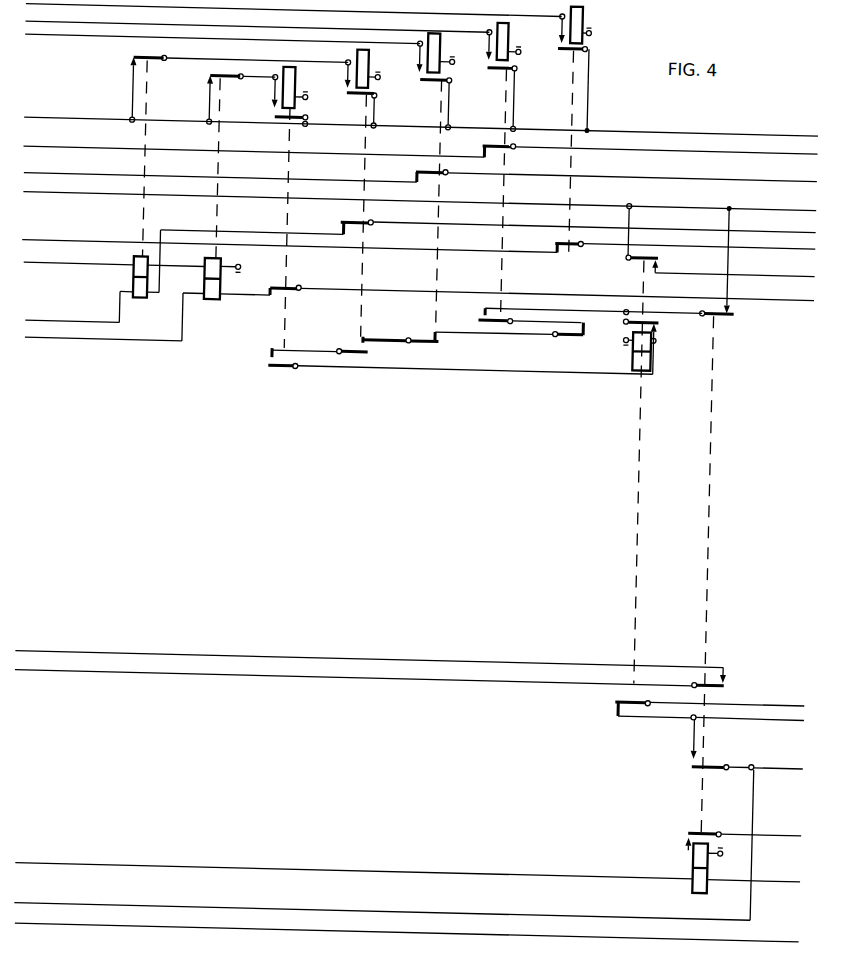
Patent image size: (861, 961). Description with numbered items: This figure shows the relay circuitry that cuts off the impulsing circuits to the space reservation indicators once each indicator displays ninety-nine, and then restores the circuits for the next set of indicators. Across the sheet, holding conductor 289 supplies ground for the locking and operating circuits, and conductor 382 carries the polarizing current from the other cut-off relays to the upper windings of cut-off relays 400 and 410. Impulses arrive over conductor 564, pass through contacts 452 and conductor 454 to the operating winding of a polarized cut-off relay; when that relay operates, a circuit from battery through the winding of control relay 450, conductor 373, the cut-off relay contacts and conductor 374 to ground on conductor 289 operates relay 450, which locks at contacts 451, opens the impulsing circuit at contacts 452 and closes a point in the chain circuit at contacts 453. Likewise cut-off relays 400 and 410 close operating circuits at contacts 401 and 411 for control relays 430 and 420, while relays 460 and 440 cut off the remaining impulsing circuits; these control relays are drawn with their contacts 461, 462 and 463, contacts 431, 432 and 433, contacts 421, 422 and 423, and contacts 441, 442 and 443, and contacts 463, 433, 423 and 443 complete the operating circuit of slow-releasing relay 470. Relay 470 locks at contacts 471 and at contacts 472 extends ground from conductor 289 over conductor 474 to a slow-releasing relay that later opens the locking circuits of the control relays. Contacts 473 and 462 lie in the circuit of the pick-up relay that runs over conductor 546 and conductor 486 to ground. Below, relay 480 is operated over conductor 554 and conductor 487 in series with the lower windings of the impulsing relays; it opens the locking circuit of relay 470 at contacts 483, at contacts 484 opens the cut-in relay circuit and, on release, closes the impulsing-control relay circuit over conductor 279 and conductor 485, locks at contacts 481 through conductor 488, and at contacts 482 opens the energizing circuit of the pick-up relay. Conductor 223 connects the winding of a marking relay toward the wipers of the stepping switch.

The conductor 373 is at (65, 20).
The conductor 374 is at (66, 116).
The conductor 454 is at (67, 145).
The conductor 564 is at (812, 134).
The holding conductor 289 is at (814, 190).
The conductor 382 is at (72, 261).
The conductor 474 is at (818, 256).
The conductor 485 is at (74, 650).
The conductor 279 is at (74, 668).
The conductor 546 is at (818, 686).
The conductor 486 is at (819, 748).
The conductor 488 is at (818, 816).
The conductor 554 is at (817, 862).
The conductor 487 is at (75, 862).
The conductor 223 is at (75, 922).
The cut-off relay 400 is at (140, 260).
The contacts 401 is at (134, 64).
The cut-off relay 410 is at (210, 258).
The contacts 411 is at (209, 77).
The control relay 420 is at (300, 208).
The relay contact 421 is at (276, 104).
The relay contact 422 is at (289, 286).
The contacts 423 is at (274, 349).
The control relay 430 is at (373, 192).
The relay contact 431 is at (350, 83).
The relay contact 432 is at (358, 218).
The contacts 433 is at (368, 326).
The control relay 440 is at (446, 182).
The relay contact 441 is at (422, 68).
The relay contact 442 is at (432, 165).
The contacts 443 is at (451, 326).
The control relay 450 is at (515, 169).
The contacts 451 is at (492, 55).
The contacts 452 is at (502, 138).
The contacts 453 is at (488, 300).
The control relay 460 is at (588, 129).
The relay contact 461 is at (559, 35).
The contacts 462 is at (558, 234).
The contacts 463 is at (603, 319).
The slow-releasing relay 470 is at (640, 335).
The contacts 471 is at (667, 314).
The contacts 472 is at (646, 252).
The contacts 473 is at (629, 694).
The relay 480 is at (714, 852).
The contacts 481 is at (703, 826).
The contacts 482 is at (706, 746).
The contacts 483 is at (742, 297).
The contacts 484 is at (744, 666).